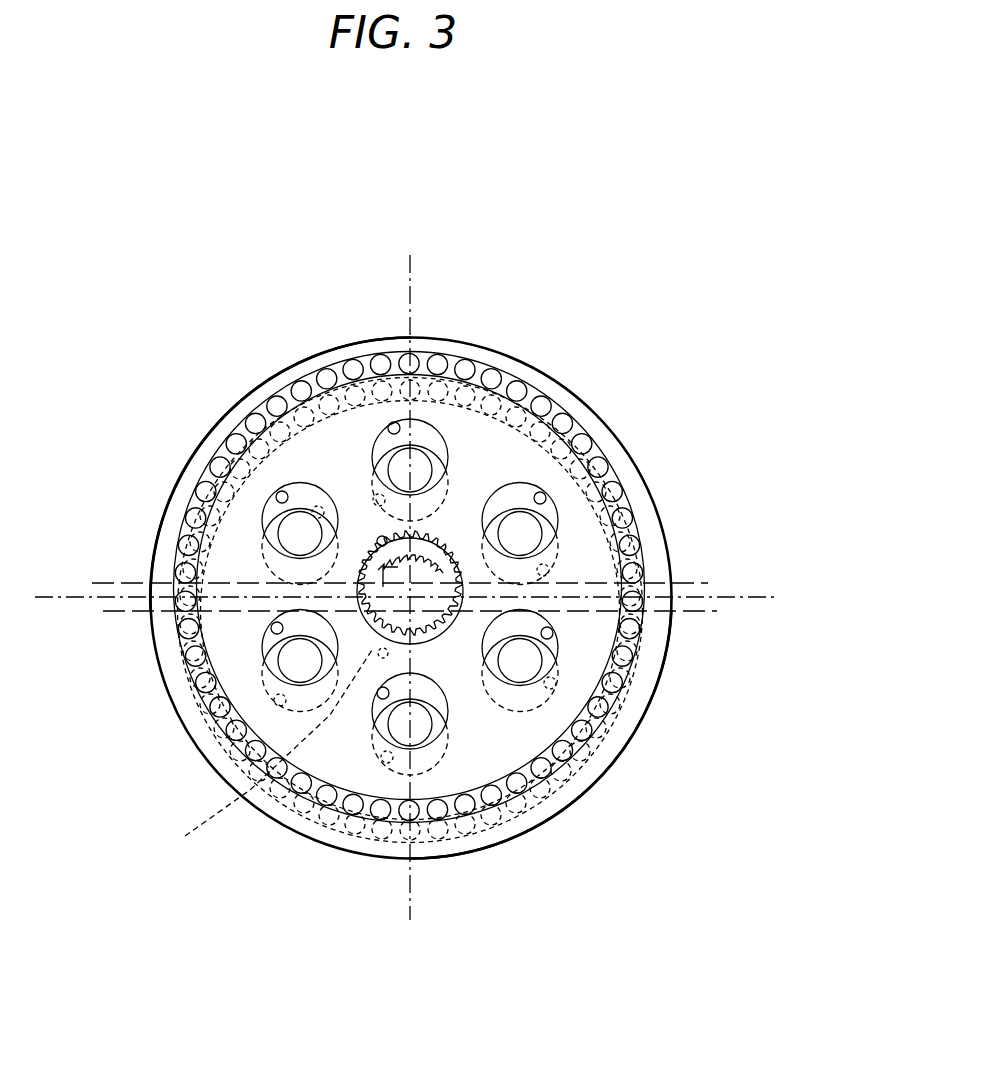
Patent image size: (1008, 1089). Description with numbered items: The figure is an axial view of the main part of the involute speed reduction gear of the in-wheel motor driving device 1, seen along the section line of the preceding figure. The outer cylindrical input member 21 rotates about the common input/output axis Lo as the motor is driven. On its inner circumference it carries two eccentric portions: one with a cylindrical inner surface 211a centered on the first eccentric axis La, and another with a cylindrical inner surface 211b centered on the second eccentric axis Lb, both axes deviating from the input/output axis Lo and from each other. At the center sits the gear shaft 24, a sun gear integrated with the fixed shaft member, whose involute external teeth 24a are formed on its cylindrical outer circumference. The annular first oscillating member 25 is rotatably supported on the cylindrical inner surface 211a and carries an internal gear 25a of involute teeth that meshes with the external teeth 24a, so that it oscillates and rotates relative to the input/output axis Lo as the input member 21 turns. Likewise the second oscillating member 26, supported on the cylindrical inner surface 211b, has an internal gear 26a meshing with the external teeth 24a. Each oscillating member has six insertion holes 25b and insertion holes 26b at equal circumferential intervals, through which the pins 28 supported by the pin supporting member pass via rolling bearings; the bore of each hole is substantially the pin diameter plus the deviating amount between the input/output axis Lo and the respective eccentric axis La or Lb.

The in-wheel motor driving device 1 is at (606, 296).
The input member 21 is at (586, 392).
The cylindrical inner surface 211a is at (270, 452).
The cylindrical inner surface 211b is at (515, 840).
The gear shaft 24 is at (355, 602).
The external teeth 24a is at (353, 592).
The first oscillating member 25 is at (430, 353).
The internal gear 25a is at (378, 537).
The insertion holes 25b is at (392, 422).
The second oscillating member 26 is at (492, 833).
The internal gear 26a is at (258, 751).
The insertion holes 26b is at (372, 500).
The pins 28 is at (373, 468).
The first eccentric axis La is at (411, 586).
The input/output axis Lo is at (410, 597).
The second eccentric axis Lb is at (410, 611).